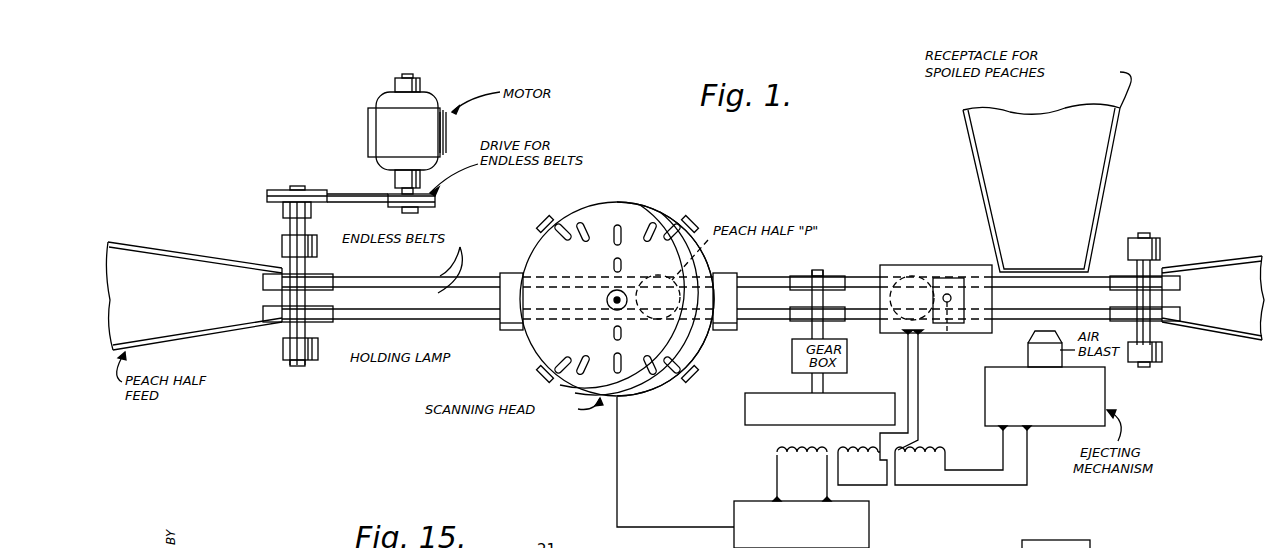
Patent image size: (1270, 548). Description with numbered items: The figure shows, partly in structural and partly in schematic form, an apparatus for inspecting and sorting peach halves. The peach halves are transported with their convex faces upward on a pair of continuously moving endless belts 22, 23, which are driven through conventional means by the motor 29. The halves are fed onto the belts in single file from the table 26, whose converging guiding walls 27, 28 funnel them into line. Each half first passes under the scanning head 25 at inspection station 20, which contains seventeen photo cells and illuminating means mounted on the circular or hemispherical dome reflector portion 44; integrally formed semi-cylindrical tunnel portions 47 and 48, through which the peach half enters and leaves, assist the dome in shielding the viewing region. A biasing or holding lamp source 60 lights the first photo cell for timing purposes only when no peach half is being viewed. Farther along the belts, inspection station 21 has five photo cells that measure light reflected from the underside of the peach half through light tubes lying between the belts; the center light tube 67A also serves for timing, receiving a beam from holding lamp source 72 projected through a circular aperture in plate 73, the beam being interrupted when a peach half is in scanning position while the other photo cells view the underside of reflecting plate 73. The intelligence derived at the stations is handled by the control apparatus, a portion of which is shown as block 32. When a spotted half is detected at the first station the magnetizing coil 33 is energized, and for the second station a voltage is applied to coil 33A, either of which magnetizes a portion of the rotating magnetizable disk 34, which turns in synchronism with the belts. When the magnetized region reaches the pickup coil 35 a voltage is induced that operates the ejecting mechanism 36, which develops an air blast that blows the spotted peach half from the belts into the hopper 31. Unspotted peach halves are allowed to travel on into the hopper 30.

In FIG. 1, the inspection station 20 is at (615, 289).
In FIG. 1, the inspection station 21 is at (937, 281).
In FIG. 1, the endless belt 22 is at (378, 276).
In FIG. 1, the endless belt 23 is at (400, 320).
In FIG. 1, the scanning head 25 is at (566, 212).
In FIG. 1, the table 26 is at (150, 262).
In FIG. 1, the converging guiding wall 27 is at (204, 259).
In FIG. 1, the converging guiding wall 28 is at (218, 337).
In FIG. 1, the motor 29 is at (436, 102).
In FIG. 1, the hopper 30 is at (1224, 335).
In FIG. 1, the hopper 31 is at (1082, 197).
In FIG. 1, the control apparatus 32 is at (862, 510).
In FIG. 1, the magnetizing coil 33 is at (806, 458).
In FIG. 1, the coil 33A is at (860, 457).
In FIG. 1, the magnetizable disk 34 is at (867, 393).
In FIG. 1, the pickup coil 35 is at (931, 445).
In FIG. 1, the ejecting mechanism 36 is at (1097, 387).
In FIG. 1, the dome reflector portion 44 is at (672, 380).
In FIG. 1, the semi-cylindrical tunnel portion 47 is at (512, 322).
In FIG. 1, the semi-cylindrical tunnel portion 48 is at (722, 326).
In FIG. 1, the holding lamp source 60 is at (610, 305).
In FIG. 1, the holding lamp source 72 is at (947, 292).
In FIG. 15, the holding lamp source 72 is at (1060, 540).
In FIG. 1, the plate 73 is at (970, 333).
In FIG. 1, the light tube 67A is at (947, 331).